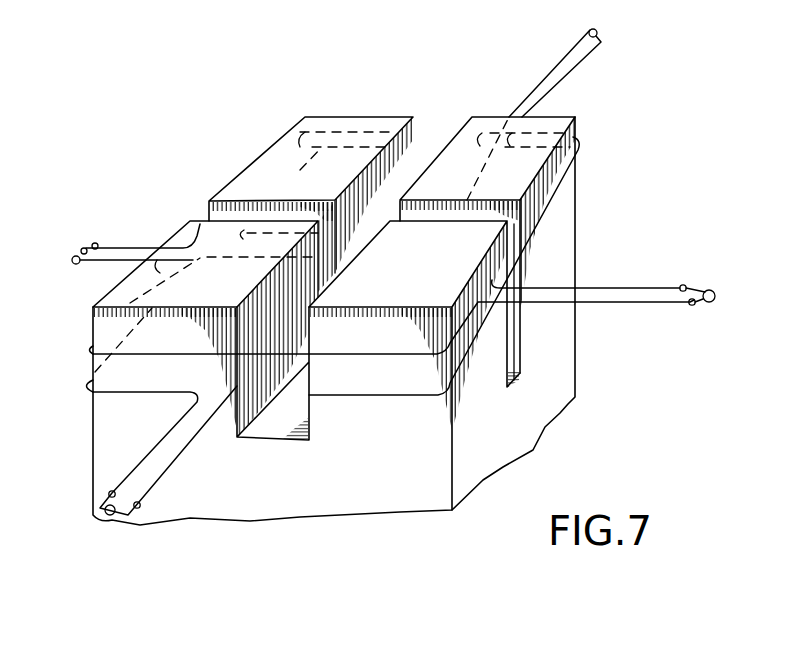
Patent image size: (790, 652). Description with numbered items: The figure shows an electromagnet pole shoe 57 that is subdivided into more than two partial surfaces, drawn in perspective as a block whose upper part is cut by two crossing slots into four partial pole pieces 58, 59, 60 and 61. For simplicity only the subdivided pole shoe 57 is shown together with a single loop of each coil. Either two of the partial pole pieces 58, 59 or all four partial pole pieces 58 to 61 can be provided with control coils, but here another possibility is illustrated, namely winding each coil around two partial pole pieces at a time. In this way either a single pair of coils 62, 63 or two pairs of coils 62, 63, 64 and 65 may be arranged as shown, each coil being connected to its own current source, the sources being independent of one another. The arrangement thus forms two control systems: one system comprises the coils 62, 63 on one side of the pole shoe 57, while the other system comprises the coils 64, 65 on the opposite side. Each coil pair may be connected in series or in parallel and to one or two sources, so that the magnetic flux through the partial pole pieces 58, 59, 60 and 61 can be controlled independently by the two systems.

The subdivided pole shoe 57 is at (103, 423).
The partial pole piece 58 is at (176, 228).
The partial pole piece 59 is at (437, 335).
The partial pole piece 60 is at (293, 127).
The partial pole piece 61 is at (578, 122).
The coil 62 is at (88, 353).
The coil 63 is at (542, 78).
The coil 64 is at (140, 221).
The coil 65 is at (670, 262).